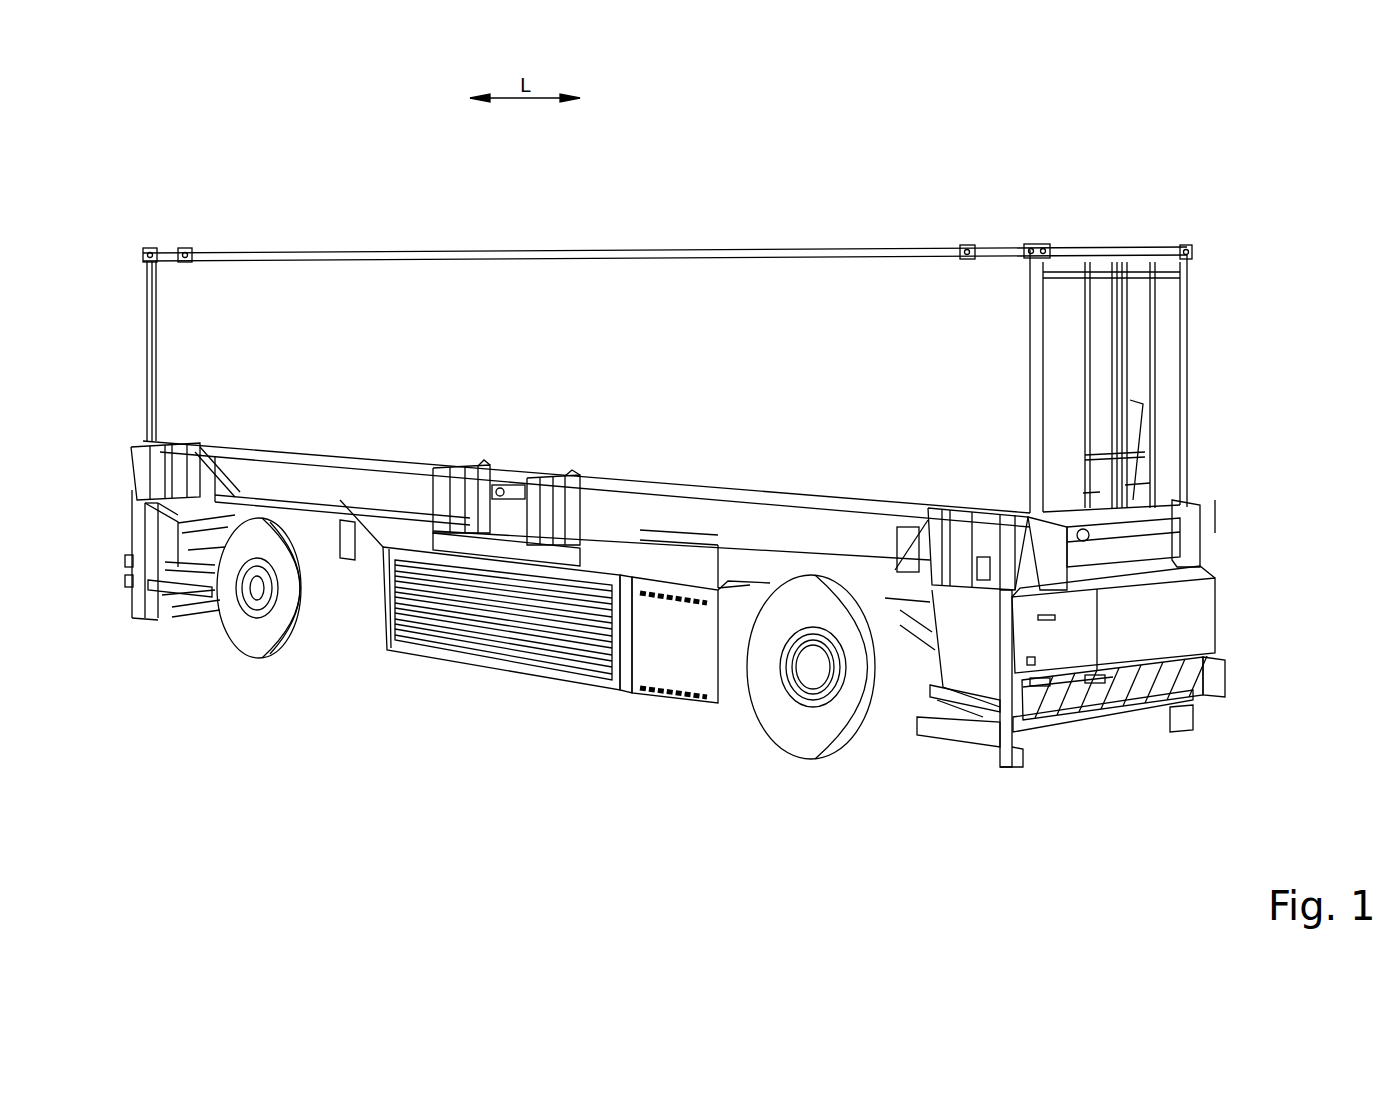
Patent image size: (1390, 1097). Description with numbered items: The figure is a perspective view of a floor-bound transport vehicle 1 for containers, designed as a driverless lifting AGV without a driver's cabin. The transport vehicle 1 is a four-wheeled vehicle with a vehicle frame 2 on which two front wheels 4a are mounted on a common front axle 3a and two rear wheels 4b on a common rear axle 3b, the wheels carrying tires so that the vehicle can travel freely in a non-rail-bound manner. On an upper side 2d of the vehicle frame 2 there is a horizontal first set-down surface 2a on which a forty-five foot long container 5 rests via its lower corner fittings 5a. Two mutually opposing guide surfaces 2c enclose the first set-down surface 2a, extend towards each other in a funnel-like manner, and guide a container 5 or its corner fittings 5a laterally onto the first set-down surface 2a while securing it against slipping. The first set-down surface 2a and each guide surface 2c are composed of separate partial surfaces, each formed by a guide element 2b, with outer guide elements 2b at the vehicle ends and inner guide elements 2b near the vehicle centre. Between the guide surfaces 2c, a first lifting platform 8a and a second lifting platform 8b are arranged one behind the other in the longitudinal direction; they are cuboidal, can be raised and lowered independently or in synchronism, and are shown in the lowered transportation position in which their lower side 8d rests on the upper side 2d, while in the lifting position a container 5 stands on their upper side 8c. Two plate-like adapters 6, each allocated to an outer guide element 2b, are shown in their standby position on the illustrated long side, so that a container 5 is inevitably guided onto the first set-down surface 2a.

The transport vehicle 1 is at (572, 636).
The vehicle frame 2 is at (501, 668).
The first set-down surface 2a is at (923, 348).
The guide element 2b is at (540, 490).
The guide surface 2c is at (884, 342).
The upper side 2d is at (635, 683).
The front axle 3a is at (205, 626).
The rear axle 3b is at (779, 720).
The front wheel 4a is at (220, 652).
The rear wheel 4b is at (799, 754).
The container 5 is at (665, 339).
The corner fitting 5a is at (182, 248).
The adapter 6 is at (535, 669).
The first lifting platform 8a is at (496, 621).
The second lifting platform 8b is at (1208, 542).
The upper side 8c is at (1239, 417).
The lower side 8d is at (812, 632).